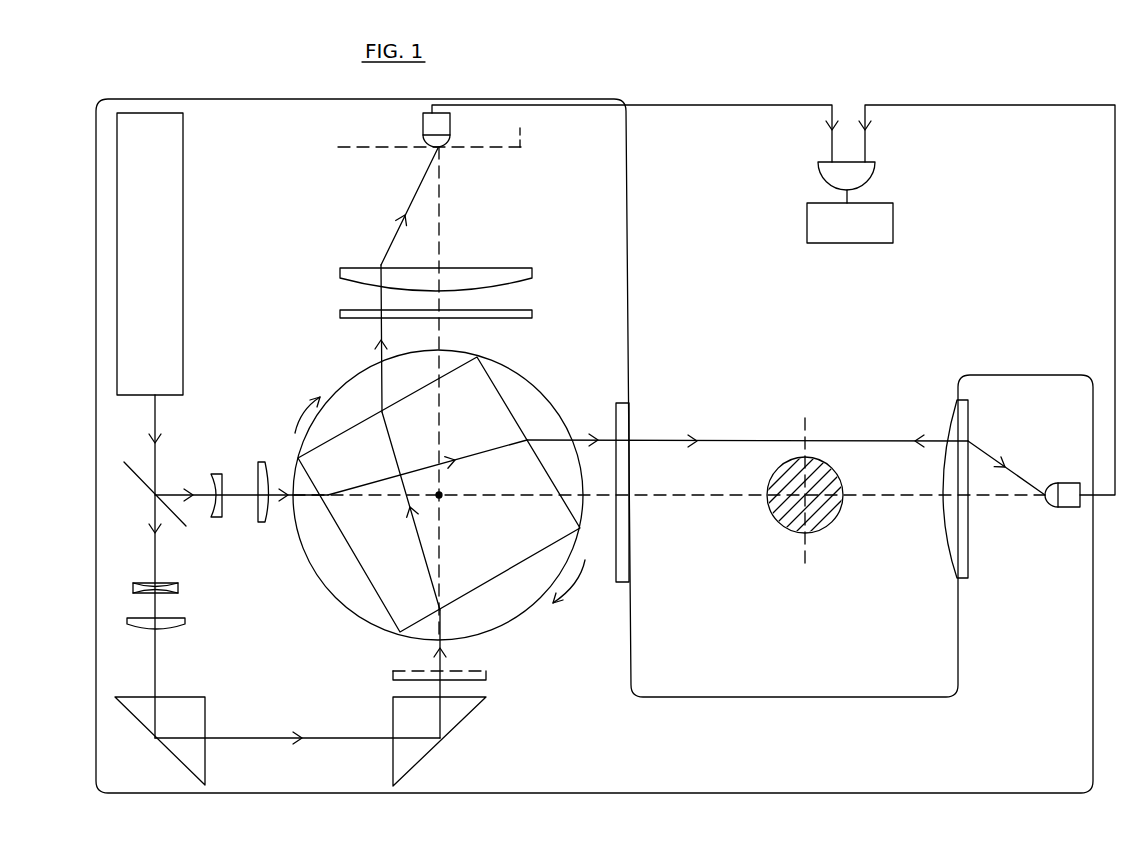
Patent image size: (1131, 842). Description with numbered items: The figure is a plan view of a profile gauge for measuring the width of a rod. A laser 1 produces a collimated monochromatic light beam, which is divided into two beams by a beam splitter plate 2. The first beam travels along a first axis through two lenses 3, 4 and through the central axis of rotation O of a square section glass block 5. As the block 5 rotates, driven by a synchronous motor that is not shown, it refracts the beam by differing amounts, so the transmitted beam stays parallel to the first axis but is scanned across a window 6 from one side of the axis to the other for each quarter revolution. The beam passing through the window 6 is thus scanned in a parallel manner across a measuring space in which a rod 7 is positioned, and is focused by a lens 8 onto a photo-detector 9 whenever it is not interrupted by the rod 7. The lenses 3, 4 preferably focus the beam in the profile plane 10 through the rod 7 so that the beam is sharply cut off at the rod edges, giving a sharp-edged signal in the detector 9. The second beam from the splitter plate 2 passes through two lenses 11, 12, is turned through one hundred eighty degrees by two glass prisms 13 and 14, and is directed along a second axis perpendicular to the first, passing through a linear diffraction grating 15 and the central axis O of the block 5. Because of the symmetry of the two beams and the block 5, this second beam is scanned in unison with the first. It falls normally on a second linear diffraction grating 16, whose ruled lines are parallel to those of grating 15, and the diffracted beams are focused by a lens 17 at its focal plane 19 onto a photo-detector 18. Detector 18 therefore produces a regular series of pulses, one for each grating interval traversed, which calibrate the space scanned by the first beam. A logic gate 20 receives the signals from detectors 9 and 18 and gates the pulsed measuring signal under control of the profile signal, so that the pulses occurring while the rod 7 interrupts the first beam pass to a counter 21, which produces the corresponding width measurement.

The laser 1 is at (155, 263).
The beam splitter plate 2 is at (138, 478).
The lens 3 is at (221, 472).
The lens 4 is at (259, 461).
The square section glass block 5 is at (330, 565).
The central axis of rotation O is at (442, 498).
The window 6 is at (630, 570).
The rod 7 is at (828, 513).
The lens 8 is at (968, 553).
The photo-detector 9 is at (1062, 509).
The profile plane 10 is at (808, 432).
The lens 11 is at (178, 588).
The lens 12 is at (185, 623).
The glass prism 13 is at (205, 762).
The glass prism 14 is at (400, 760).
The linear diffraction grating 15 is at (486, 675).
The second linear diffraction grating 16 is at (532, 316).
The lens 17 is at (532, 272).
The photo-detector 18 is at (450, 124).
The focal plane 19 is at (522, 134).
The logic gate 20 is at (875, 175).
The counter 21 is at (893, 223).